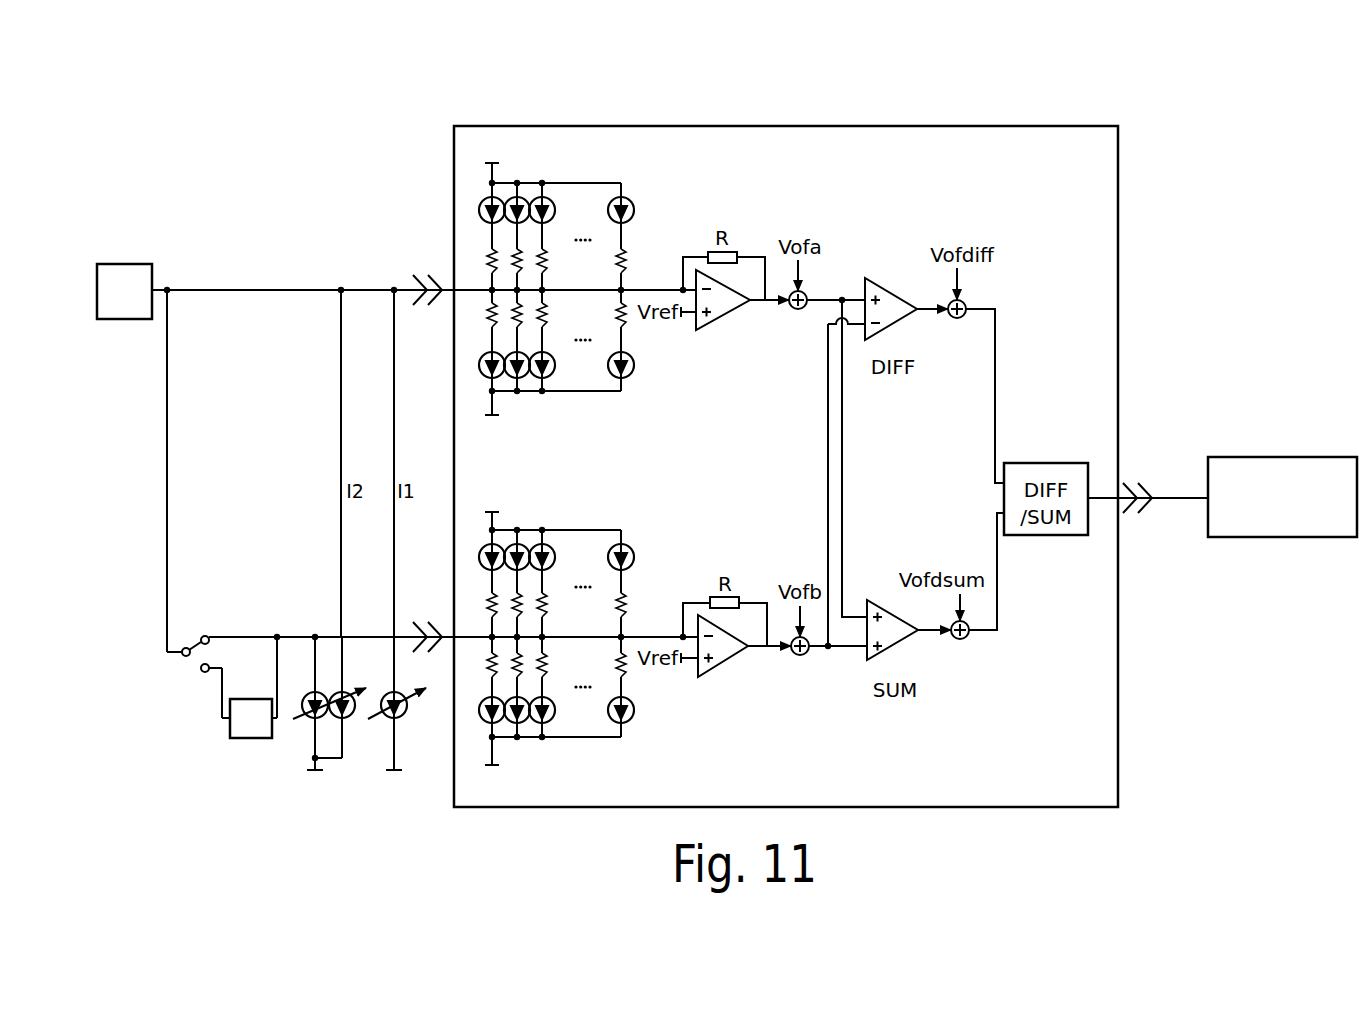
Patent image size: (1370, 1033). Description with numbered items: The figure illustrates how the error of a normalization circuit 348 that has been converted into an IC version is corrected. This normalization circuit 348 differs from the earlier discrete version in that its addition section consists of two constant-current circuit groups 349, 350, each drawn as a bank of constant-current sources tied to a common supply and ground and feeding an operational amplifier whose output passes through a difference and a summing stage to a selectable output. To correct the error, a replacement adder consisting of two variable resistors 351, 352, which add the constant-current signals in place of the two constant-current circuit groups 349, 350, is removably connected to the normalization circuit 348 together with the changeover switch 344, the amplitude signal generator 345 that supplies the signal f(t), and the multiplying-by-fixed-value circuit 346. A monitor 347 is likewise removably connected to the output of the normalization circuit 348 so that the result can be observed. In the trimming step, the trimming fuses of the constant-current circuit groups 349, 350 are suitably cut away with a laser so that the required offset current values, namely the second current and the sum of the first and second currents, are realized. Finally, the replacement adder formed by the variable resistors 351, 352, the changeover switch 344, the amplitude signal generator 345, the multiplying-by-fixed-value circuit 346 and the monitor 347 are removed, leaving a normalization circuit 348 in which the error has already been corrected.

The changeover switch 344 is at (190, 640).
The amplitude signal generator 345 is at (118, 264).
The multiplying-by-fixed-value circuit 346 is at (250, 738).
The monitor 347 is at (1232, 537).
The normalization circuit 348 is at (913, 126).
The constant-current circuit group 349 is at (577, 409).
The constant-current circuit group 350 is at (577, 514).
The variable resistor 351 is at (312, 718).
The variable resistor 352 is at (392, 718).